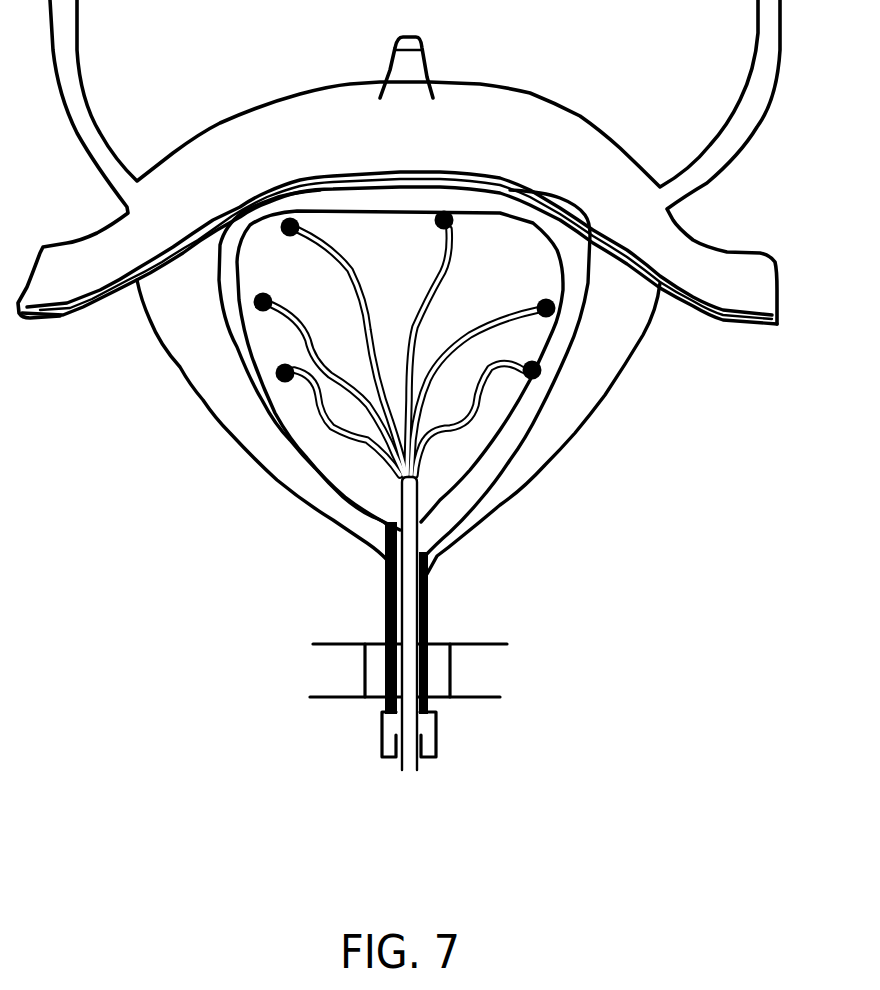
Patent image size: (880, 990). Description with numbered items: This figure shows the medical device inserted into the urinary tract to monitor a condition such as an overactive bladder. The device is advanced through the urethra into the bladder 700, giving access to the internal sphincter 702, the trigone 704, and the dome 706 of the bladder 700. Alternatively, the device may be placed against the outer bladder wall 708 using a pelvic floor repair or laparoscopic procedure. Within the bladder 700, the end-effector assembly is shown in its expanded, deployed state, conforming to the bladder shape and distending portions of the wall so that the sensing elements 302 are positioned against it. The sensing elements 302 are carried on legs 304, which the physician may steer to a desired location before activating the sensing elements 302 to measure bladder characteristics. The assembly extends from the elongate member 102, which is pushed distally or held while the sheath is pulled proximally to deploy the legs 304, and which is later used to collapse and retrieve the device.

The bladder 700 is at (508, 85).
The internal sphincter 702 is at (382, 562).
The trigone 704 is at (520, 420).
The dome 706 is at (395, 177).
The outer bladder wall 708 is at (570, 360).
The sensing elements 302 is at (278, 384).
The legs 304 is at (327, 433).
The elongate member 102 is at (409, 568).